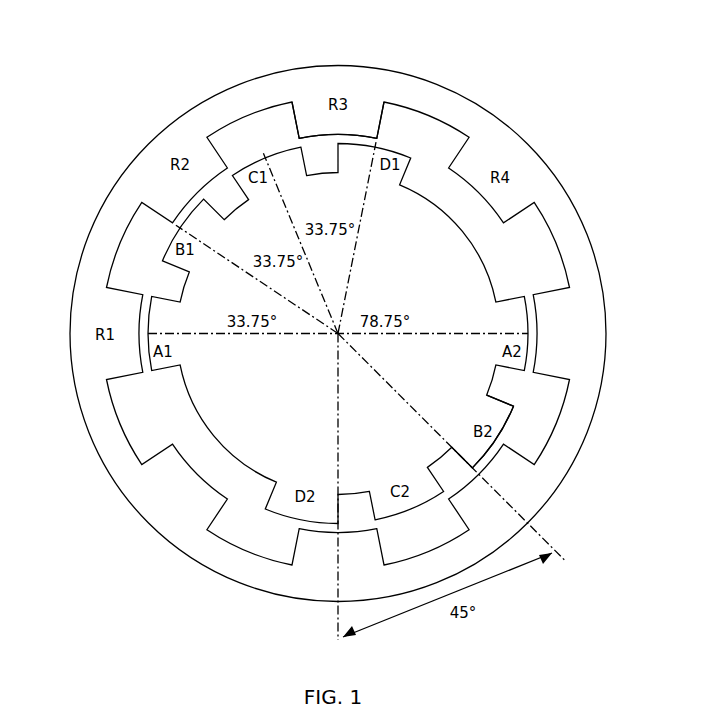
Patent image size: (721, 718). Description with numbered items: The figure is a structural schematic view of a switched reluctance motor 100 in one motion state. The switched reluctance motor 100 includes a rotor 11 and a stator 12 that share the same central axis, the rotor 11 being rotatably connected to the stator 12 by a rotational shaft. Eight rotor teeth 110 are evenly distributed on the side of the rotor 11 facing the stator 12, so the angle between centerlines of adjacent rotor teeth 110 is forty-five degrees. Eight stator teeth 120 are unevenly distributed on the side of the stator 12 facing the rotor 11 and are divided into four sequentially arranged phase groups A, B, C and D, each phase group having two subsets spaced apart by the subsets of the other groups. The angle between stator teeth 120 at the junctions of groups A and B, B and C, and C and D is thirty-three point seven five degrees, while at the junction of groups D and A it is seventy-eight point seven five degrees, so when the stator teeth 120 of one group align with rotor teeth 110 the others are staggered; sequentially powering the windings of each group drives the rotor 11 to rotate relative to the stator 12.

The switched reluctance motor 100 is at (117, 68).
The rotor 11 is at (133, 157).
The stator 12 is at (488, 262).
The rotor teeth 110 is at (368, 118).
The stator teeth 120 is at (507, 425).